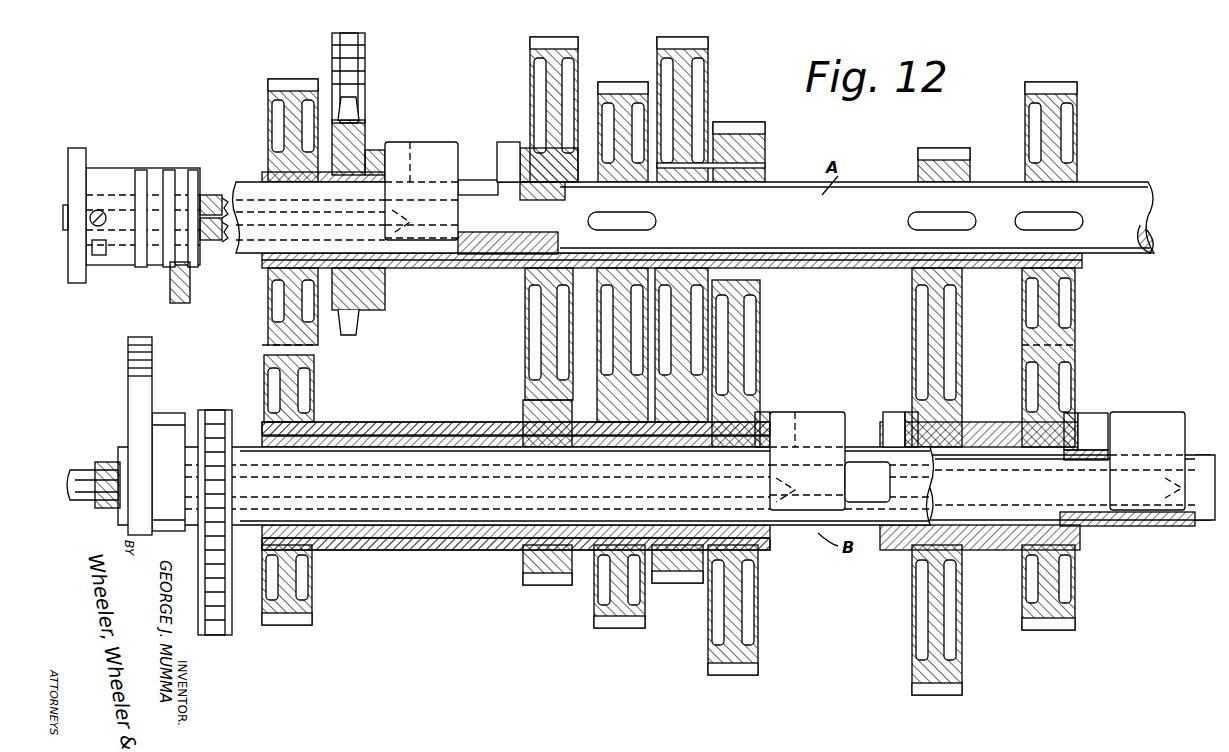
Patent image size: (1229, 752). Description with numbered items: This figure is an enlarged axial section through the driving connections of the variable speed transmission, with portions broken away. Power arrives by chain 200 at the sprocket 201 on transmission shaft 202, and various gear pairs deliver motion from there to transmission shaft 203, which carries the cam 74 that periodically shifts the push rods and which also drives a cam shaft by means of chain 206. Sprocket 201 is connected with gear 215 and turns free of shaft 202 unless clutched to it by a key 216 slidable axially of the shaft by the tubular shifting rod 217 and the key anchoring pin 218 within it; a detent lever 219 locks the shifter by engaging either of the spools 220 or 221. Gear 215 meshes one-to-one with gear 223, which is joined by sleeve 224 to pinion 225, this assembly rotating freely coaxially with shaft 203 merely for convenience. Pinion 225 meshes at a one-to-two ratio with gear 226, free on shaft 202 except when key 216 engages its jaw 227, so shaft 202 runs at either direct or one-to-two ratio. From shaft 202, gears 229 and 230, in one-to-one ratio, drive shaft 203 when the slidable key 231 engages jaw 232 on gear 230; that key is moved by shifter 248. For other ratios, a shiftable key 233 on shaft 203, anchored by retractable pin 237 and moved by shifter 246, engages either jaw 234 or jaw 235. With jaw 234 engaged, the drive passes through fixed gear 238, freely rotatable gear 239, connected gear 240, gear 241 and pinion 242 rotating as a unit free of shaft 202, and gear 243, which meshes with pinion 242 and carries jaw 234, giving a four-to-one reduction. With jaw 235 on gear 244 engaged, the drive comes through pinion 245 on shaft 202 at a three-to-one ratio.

The cam 74 is at (153, 374).
The chain 200 is at (332, 68).
The sprocket 201 is at (345, 298).
The transmission shaft 202 is at (896, 180).
The transmission shaft 203 is at (1012, 463).
The chain 206 is at (223, 622).
The gear 215 is at (282, 302).
The key 216 is at (437, 152).
The tubular shifting rod 217 is at (207, 240).
The key anchoring pin 218 is at (211, 208).
The detent lever 219 is at (170, 297).
The spool 220 is at (187, 176).
The spool 221 is at (130, 178).
The gear 223 is at (305, 394).
The sleeve 224 is at (407, 414).
The pinion 225 is at (526, 418).
The gear 226 is at (545, 103).
The jaw 227 is at (506, 152).
The gear 229 is at (1068, 168).
The gear 230 is at (1068, 376).
The slidable key 231 is at (1160, 426).
The jaw 232 is at (1091, 428).
The shiftable key 233 is at (818, 425).
The jaw 234 is at (762, 410).
The jaw 235 is at (899, 421).
The retractable pin 237 is at (83, 478).
The gear 238 is at (645, 88).
The gear 239 is at (598, 612).
The gear 240 is at (698, 580).
The gear 241 is at (700, 62).
The pinion 242 is at (760, 142).
The gear 243 is at (755, 348).
The gear 244 is at (926, 347).
The pinion 245 is at (966, 166).
The shifter 246 is at (106, 452).
The shifter 248 is at (1098, 506).